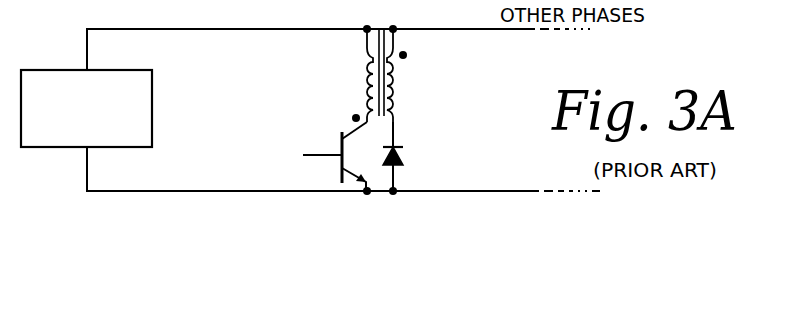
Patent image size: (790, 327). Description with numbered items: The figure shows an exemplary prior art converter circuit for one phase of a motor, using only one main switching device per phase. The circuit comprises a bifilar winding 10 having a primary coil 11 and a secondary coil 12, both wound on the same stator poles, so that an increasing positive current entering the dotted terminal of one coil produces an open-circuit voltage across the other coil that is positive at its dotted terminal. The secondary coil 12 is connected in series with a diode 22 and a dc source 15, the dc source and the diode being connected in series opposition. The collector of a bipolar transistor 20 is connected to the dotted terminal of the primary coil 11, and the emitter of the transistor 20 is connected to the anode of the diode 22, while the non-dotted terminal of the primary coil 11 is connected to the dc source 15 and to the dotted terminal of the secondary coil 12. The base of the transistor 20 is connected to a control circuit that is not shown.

The bifilar winding 10 is at (379, 29).
The primary coil 11 is at (360, 88).
The secondary coil 12 is at (401, 88).
The dc source 15 is at (97, 140).
The bipolar transistor 20 is at (341, 150).
The diode 22 is at (401, 160).